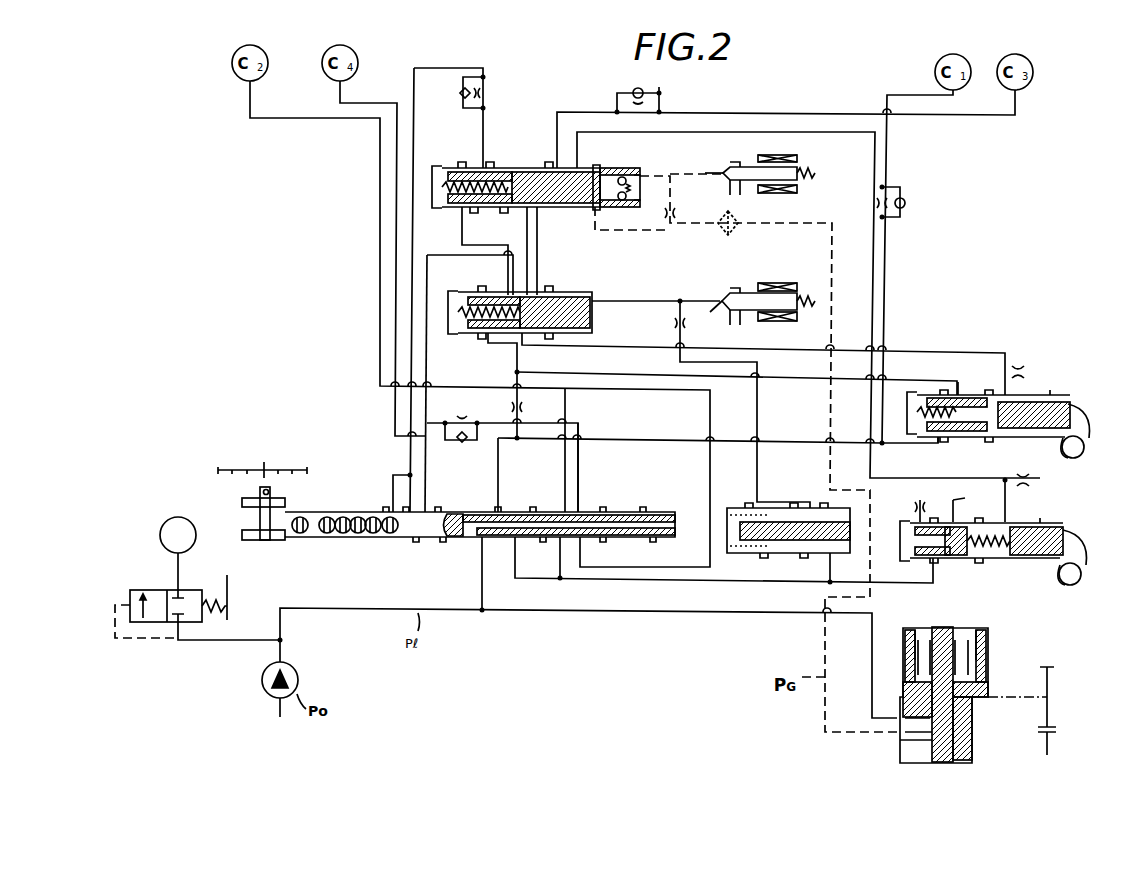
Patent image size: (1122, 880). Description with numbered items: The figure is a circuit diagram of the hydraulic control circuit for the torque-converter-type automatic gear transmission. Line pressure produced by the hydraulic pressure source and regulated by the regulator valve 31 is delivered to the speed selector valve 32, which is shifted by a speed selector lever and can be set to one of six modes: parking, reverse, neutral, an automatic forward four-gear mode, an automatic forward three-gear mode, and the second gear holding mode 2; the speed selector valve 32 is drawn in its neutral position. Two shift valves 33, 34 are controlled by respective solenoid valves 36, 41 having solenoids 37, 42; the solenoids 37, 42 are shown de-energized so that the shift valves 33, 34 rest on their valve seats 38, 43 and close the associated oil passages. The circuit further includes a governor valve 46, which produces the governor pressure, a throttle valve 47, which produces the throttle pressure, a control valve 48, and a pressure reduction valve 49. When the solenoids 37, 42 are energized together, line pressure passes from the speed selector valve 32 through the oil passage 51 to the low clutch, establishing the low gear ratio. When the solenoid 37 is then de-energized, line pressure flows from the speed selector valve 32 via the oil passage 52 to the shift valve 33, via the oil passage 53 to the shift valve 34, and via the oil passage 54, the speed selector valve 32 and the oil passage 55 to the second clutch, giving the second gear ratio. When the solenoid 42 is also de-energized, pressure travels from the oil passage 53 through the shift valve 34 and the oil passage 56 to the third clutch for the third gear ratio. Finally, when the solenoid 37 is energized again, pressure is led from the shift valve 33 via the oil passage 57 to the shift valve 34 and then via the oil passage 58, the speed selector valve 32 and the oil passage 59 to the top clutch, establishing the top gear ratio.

The second gear holding mode 2 is at (176, 515).
The regulator valve 31 is at (141, 586).
The speed selector valve 32 is at (366, 546).
The shift valve 33 is at (571, 290).
The shift valve 34 is at (614, 165).
The solenoid valve 36 is at (748, 294).
The solenoid 37 is at (784, 283).
The valve seat 38 is at (725, 313).
The solenoid valve 41 is at (750, 168).
The solenoid 42 is at (791, 155).
The valve seat 43 is at (723, 175).
The governor valve 46 is at (994, 657).
The throttle valve 47 is at (1061, 521).
The control valve 48 is at (1041, 389).
The pressure reduction valve 49 is at (785, 548).
The oil passage 51 is at (885, 283).
The oil passage 52 is at (517, 353).
The oil passage 53 is at (538, 254).
The oil passage 54 is at (581, 474).
The oil passage 55 is at (378, 263).
The oil passage 56 is at (978, 118).
The oil passage 57 is at (462, 231).
The oil passage 58 is at (423, 150).
The oil passage 59 is at (371, 103).